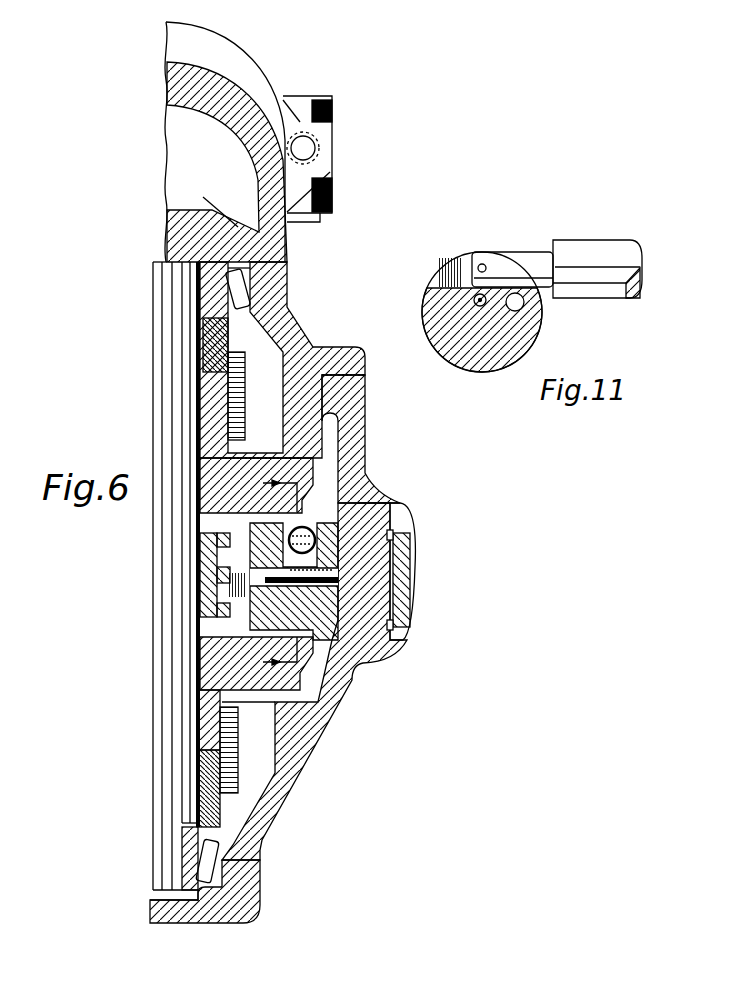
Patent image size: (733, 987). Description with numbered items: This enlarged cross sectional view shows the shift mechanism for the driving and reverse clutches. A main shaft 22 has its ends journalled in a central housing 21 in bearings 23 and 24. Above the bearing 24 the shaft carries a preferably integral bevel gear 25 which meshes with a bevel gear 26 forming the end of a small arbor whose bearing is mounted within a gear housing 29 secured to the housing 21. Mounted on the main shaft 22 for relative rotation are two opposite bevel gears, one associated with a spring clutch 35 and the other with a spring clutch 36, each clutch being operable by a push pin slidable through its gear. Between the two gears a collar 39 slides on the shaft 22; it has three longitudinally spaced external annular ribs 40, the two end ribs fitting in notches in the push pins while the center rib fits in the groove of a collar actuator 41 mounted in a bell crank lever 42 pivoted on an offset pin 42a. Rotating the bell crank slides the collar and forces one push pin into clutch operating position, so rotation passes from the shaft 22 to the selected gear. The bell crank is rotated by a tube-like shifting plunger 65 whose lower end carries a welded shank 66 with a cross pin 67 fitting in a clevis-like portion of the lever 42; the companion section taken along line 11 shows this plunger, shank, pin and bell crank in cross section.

In FIG. 6, the gear housing 29 is at (167, 88).
In FIG. 6, the bevel gear 26 is at (233, 180).
In FIG. 6, the bevel gear 25 is at (177, 247).
In FIG. 6, the bearing 24 is at (240, 284).
In FIG. 6, the spring clutch 35 is at (203, 342).
In FIG. 6, the main shaft 22 is at (185, 395).
In FIG. 6, the external annular ribs 40 is at (228, 538).
In FIG. 6, the collar 39 is at (208, 548).
In FIG. 6, the collar actuator 41 is at (222, 574).
In FIG. 6, the section line 11 is at (267, 575).
In FIG. 6, the shank 66 is at (305, 527).
In FIG. 11, the shank 66 is at (528, 258).
In FIG. 6, the shifting plunger 65 is at (360, 500).
In FIG. 11, the shifting plunger 65 is at (600, 252).
In FIG. 6, the bell crank lever 42 is at (318, 640).
In FIG. 11, the bell crank lever 42 is at (482, 372).
In FIG. 11, the offset pin 42a is at (522, 305).
In FIG. 11, the cross pin 67 is at (485, 265).
In FIG. 6, the spring clutch 36 is at (220, 752).
In FIG. 6, the bearing 23 is at (215, 864).
In FIG. 6, the central housing 21 is at (196, 920).